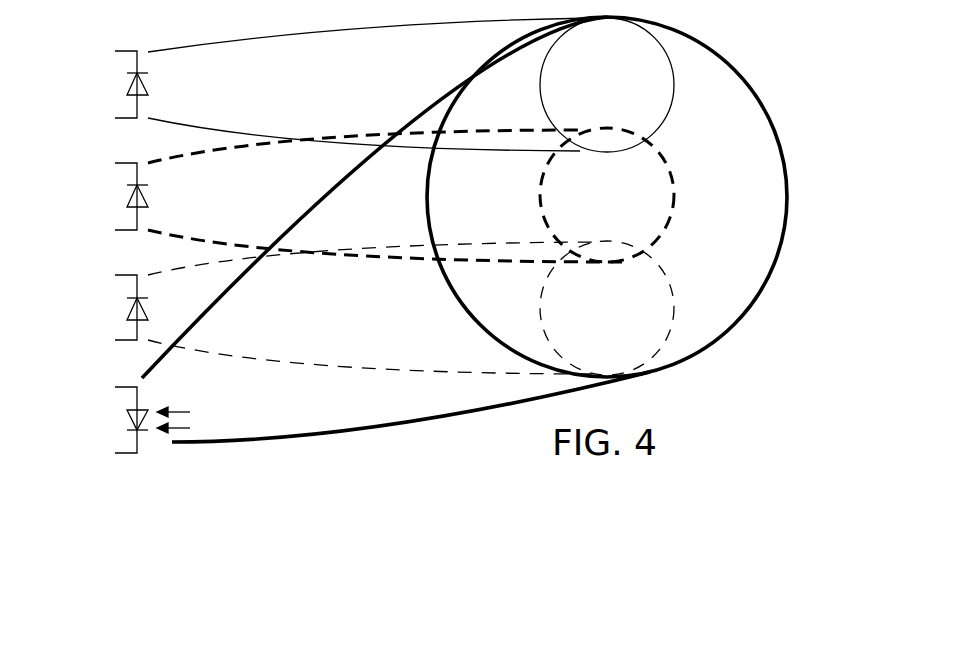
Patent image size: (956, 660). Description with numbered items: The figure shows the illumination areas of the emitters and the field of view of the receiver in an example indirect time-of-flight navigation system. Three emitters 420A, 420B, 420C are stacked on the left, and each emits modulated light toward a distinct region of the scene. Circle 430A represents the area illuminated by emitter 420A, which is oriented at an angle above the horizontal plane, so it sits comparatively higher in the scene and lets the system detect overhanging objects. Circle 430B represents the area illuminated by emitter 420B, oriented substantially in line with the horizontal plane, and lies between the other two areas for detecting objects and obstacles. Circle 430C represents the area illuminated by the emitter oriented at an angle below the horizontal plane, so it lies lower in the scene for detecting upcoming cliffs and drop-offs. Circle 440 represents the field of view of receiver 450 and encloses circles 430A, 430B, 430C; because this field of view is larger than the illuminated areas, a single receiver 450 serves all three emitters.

The emitter 420A is at (128, 83).
The emitter 420B is at (128, 195).
The emitter 420C is at (128, 305).
The circle 430A is at (638, 100).
The circle 430B is at (638, 210).
The circle 430C is at (638, 324).
The circle 440 is at (782, 141).
The receiver 450 is at (130, 424).